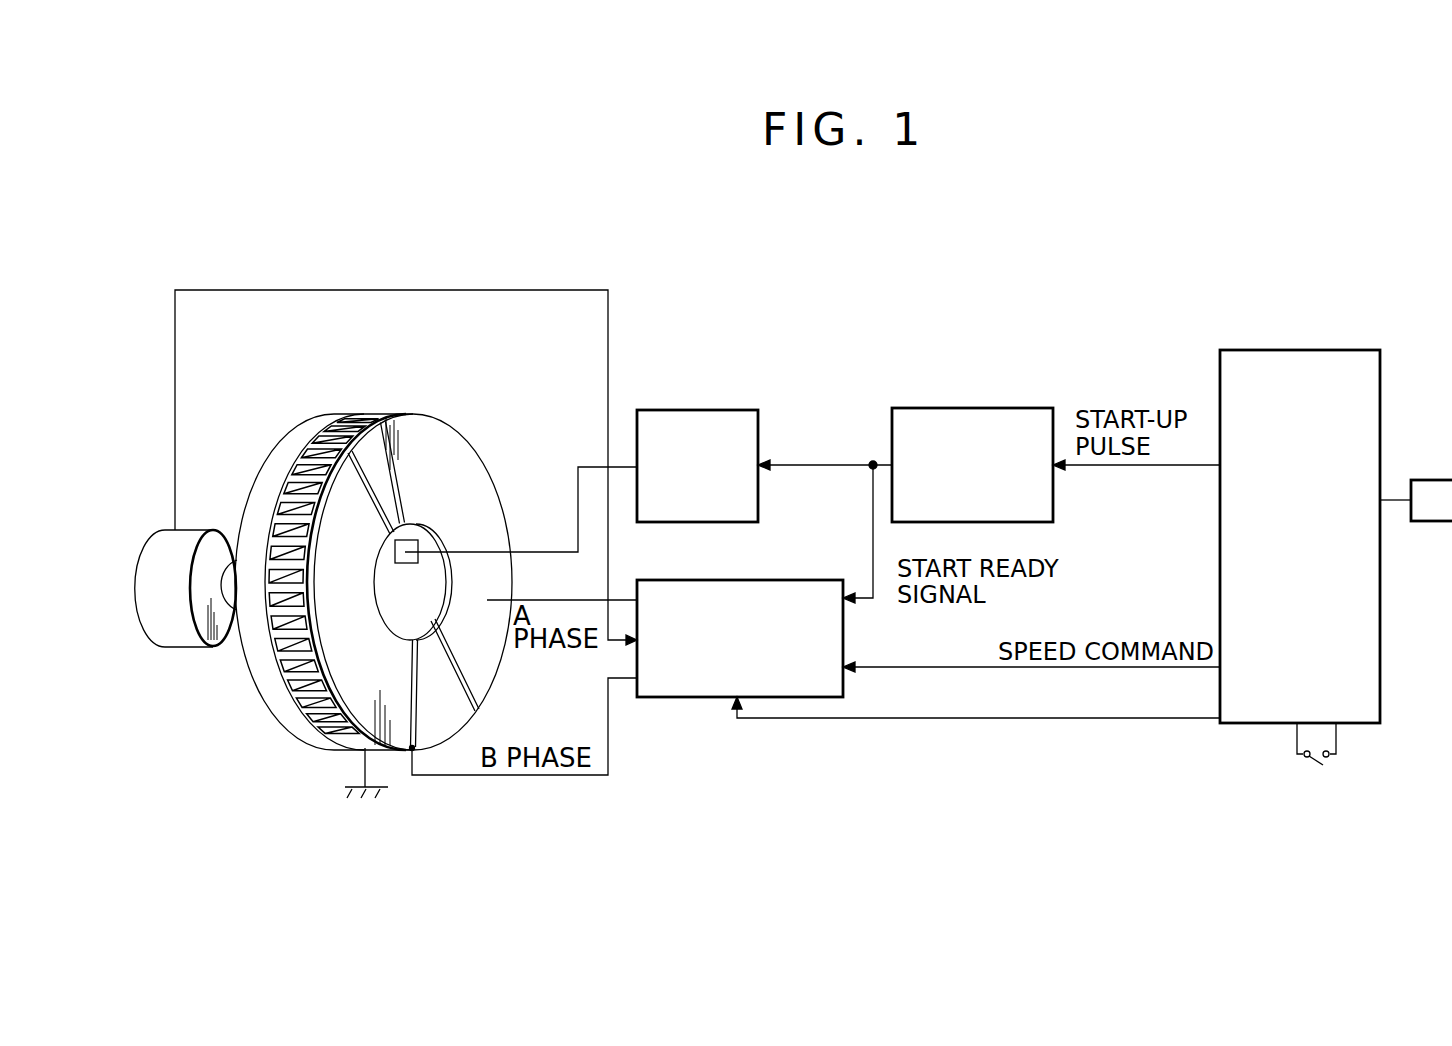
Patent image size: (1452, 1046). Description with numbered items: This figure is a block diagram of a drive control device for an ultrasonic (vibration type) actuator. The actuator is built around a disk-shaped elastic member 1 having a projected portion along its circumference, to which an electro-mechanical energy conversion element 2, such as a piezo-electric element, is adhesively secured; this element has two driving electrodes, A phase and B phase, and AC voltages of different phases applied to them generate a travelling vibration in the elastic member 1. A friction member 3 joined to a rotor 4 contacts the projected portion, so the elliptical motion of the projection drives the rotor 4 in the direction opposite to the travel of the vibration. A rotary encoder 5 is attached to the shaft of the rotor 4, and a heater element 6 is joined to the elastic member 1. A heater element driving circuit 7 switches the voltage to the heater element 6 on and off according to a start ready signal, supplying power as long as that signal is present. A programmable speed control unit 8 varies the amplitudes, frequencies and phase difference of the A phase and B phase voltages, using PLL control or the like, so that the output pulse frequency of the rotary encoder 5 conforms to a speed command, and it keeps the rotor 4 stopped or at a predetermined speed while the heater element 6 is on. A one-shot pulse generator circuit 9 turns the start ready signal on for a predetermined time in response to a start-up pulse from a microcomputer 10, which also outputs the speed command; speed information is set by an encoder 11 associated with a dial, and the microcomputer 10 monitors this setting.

The elastic member 1 is at (388, 752).
The electro-mechanical energy conversion element 2 is at (455, 455).
The friction member 3 is at (322, 437).
The rotor 4 is at (300, 438).
The rotary encoder 5 is at (135, 573).
The heater element 6 is at (408, 540).
The heater element driving circuit 7 is at (712, 410).
The programmable speed control unit 8 is at (764, 580).
The one-shot pulse generator circuit 9 is at (972, 408).
The microcomputer 10 is at (1295, 350).
The encoder 11 is at (1428, 480).